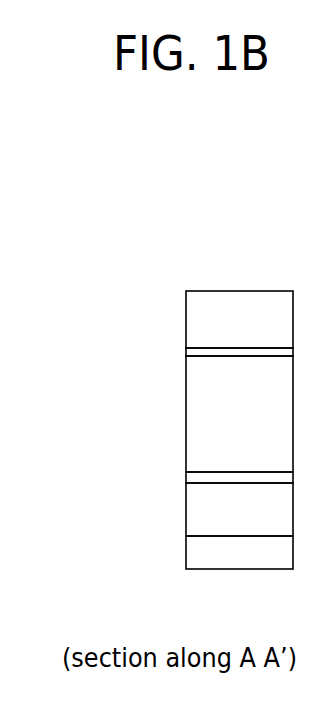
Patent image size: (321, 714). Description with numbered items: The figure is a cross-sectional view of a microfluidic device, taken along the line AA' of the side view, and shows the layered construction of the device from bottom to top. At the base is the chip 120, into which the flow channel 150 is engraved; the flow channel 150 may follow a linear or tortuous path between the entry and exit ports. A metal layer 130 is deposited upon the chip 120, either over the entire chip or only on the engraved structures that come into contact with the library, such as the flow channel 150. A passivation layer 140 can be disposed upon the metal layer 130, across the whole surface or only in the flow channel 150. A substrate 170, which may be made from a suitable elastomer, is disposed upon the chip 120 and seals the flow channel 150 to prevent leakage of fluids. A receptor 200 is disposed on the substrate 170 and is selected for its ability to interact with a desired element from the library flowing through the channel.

The chip 120 is at (186, 553).
The metal layer 130 is at (202, 520).
The passivation layer 140 is at (223, 471).
The flow channel 150 is at (212, 383).
The substrate 170 is at (195, 298).
The receptor 200 is at (227, 348).